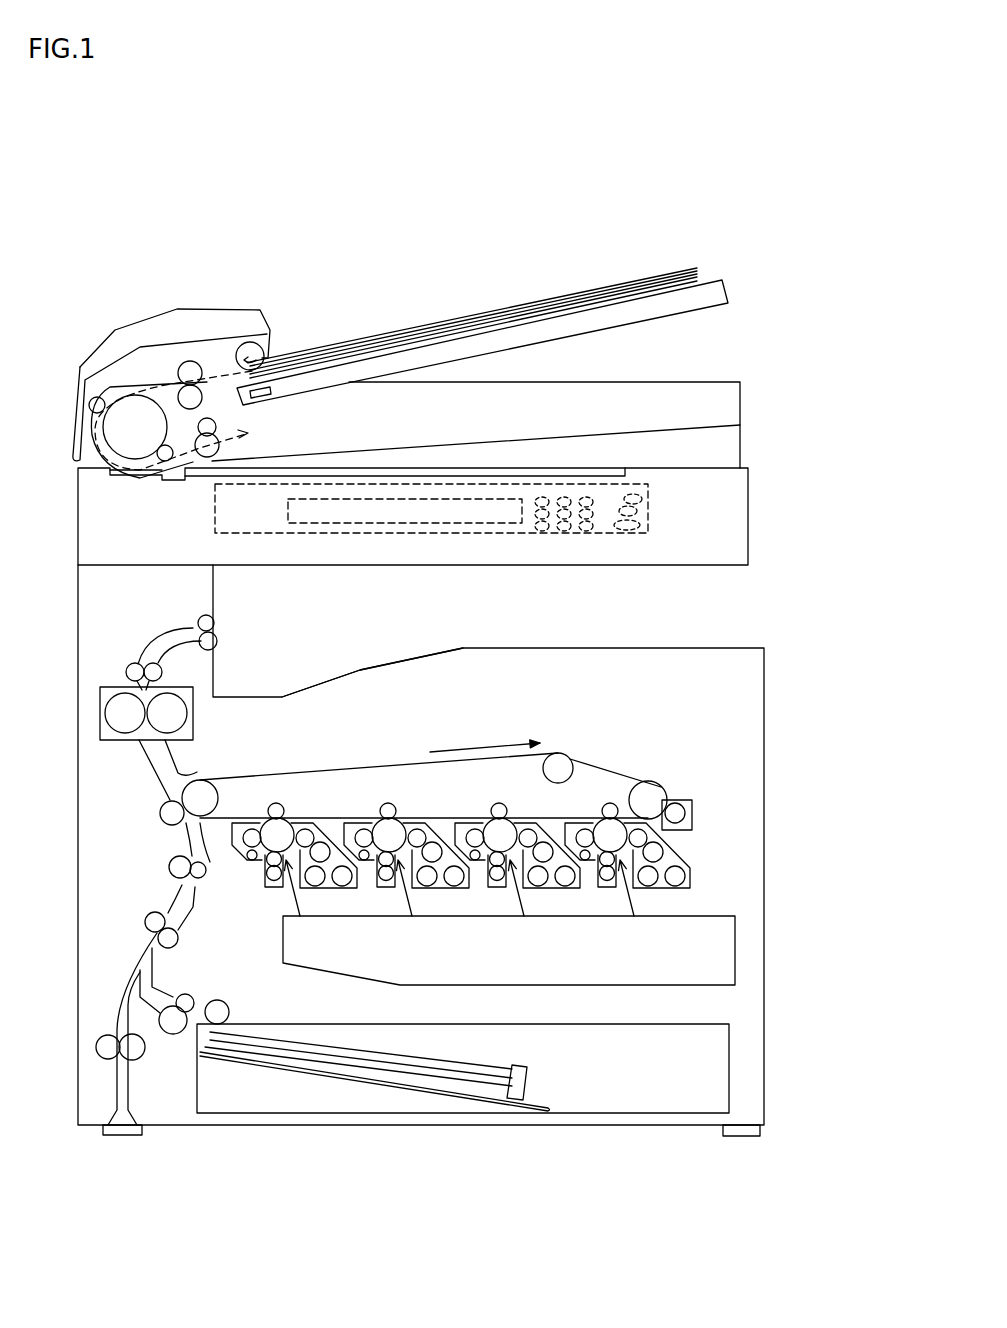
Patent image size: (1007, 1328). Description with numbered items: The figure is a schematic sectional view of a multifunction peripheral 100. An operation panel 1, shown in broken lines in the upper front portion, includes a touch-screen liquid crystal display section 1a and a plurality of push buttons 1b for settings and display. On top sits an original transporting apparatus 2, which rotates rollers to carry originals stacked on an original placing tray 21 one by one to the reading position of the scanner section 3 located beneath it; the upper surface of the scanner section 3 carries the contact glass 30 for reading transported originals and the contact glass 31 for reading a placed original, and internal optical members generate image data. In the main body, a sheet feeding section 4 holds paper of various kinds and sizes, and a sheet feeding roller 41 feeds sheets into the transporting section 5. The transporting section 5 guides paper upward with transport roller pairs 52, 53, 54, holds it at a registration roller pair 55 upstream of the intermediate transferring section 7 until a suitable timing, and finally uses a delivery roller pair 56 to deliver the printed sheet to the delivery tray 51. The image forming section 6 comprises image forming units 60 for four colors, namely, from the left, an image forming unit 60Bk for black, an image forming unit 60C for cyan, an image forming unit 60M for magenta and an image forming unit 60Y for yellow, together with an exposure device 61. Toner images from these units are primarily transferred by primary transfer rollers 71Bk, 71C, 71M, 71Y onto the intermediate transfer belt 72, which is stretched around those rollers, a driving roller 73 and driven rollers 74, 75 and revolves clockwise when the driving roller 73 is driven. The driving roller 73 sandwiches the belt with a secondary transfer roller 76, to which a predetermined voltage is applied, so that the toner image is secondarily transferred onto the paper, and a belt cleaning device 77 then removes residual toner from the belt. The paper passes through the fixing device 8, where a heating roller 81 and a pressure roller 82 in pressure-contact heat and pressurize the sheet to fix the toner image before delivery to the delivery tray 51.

The multifunction peripheral 100 is at (114, 264).
The operation panel 1 is at (648, 492).
The liquid crystal display section 1a is at (392, 526).
The push buttons 1b is at (653, 519).
The original transporting apparatus 2 is at (271, 306).
The original placing tray 21 is at (720, 292).
The scanner section 3 is at (760, 548).
The contact glass for reading transported originals 30 is at (130, 478).
The contact glass for reading a placed original 31 is at (523, 470).
The sheet feeding section 4 is at (618, 1123).
The sheet feeding roller 41 is at (228, 1012).
The transporting section 5 is at (168, 892).
The delivery tray 51 is at (358, 672).
The transport roller pair 52 is at (134, 662).
The transport roller pair 53 is at (145, 920).
The transport roller pair 54 is at (187, 997).
The registration roller pair 55 is at (172, 867).
The delivery roller pair 56 is at (216, 620).
The image forming section 6 is at (724, 867).
The image forming units 60 is at (710, 899).
The image forming unit for black 60Bk is at (251, 891).
The image forming unit for cyan 60C is at (387, 903).
The image forming unit for magenta 60M is at (499, 903).
The image forming unit for yellow 60Y is at (622, 903).
The exposure device 61 is at (720, 958).
The intermediate transferring section 7 is at (656, 760).
The primary transfer roller for black 71Bk is at (283, 811).
The primary transfer roller for cyan 71C is at (395, 811).
The primary transfer roller for magenta 71M is at (499, 806).
The primary transfer roller for yellow 71Y is at (602, 807).
The intermediate transfer belt 72 is at (607, 765).
The driving roller 73 is at (216, 800).
The driven roller 74 is at (562, 753).
The driven roller 75 is at (665, 795).
The secondary transfer roller 76 is at (160, 818).
The belt cleaning device 77 is at (695, 827).
The fixing device 8 is at (206, 692).
The heating roller 81 is at (192, 713).
The pressure roller 82 is at (113, 713).